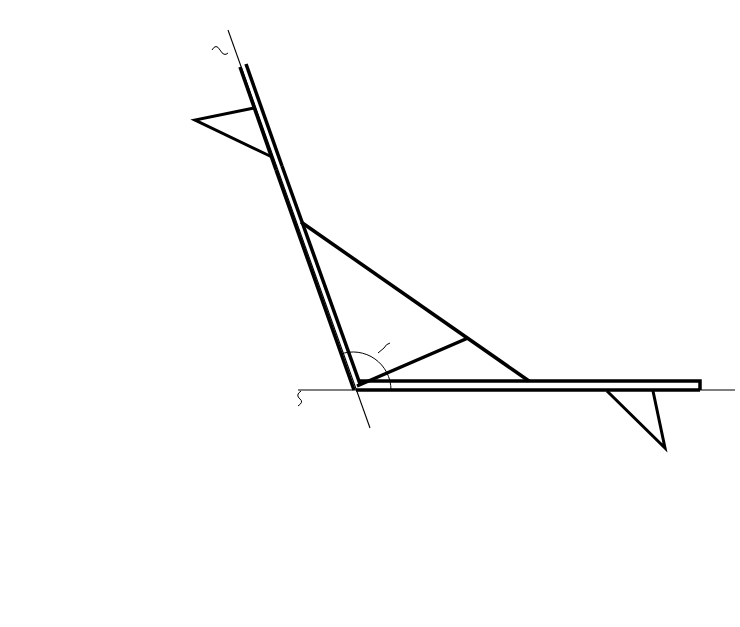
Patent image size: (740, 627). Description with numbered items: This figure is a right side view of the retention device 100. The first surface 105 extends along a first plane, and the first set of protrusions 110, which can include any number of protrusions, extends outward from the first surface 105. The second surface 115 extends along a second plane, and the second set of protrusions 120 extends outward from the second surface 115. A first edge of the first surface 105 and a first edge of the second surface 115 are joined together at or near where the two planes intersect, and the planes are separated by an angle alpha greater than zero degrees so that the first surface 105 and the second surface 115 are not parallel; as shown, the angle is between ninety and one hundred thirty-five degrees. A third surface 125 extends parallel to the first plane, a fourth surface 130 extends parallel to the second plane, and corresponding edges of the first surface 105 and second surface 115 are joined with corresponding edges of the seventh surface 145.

The retention device 100 is at (411, 317).
The first surface 105 is at (525, 393).
The first set of protrusions 110 is at (643, 405).
The second surface 115 is at (295, 233).
The second set of protrusions 120 is at (245, 125).
The third surface 125 is at (668, 380).
The fourth surface 130 is at (290, 167).
The seventh surface 145 is at (365, 302).